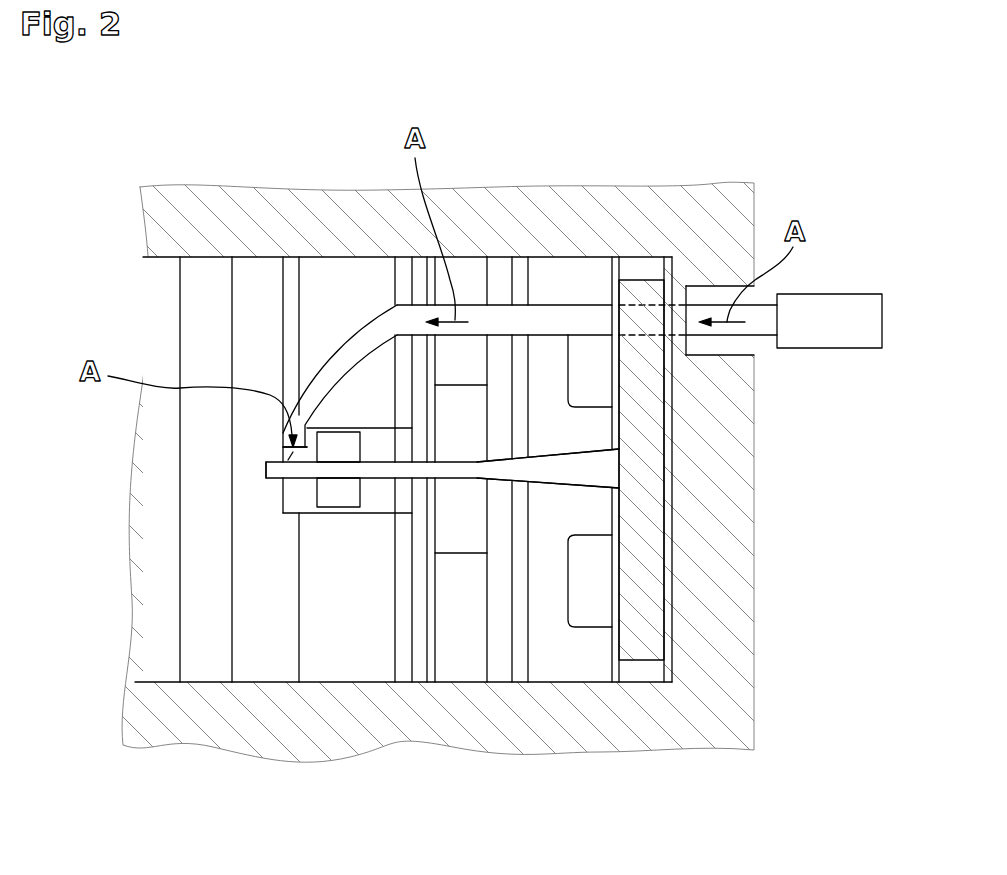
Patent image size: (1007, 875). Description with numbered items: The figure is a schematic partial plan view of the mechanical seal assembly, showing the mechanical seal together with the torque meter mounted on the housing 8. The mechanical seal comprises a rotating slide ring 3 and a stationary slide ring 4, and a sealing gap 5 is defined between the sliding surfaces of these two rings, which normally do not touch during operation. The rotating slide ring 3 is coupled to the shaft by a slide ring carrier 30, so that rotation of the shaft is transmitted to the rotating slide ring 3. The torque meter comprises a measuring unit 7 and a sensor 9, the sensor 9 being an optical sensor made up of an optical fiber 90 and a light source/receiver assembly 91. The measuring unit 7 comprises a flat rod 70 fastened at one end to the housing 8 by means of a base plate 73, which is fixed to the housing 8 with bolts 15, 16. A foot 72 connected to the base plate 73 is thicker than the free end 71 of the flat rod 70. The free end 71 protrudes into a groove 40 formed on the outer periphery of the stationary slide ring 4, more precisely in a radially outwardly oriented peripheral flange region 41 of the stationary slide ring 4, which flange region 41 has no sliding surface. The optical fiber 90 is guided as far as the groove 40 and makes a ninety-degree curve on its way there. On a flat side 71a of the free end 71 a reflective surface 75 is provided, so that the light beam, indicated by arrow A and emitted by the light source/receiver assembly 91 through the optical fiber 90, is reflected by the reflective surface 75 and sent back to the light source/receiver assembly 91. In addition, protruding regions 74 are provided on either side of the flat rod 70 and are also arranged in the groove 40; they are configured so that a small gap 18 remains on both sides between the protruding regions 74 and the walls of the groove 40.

The rotating slide ring 3 is at (206, 575).
The stationary slide ring 4 is at (248, 612).
The sealing gap 5 is at (230, 613).
The measuring unit 7 is at (470, 256).
The housing 8 is at (700, 222).
The sensor 9 is at (379, 290).
The bolt 15 is at (592, 603).
The bolt 16 is at (598, 388).
The gap 18 is at (335, 443).
The slide ring carrier 30 is at (153, 527).
The groove 40 is at (388, 493).
The flange region 41 is at (368, 637).
The flat rod 70 is at (473, 488).
The free end 71 is at (272, 467).
The flat side 71a is at (267, 444).
The foot 72 is at (597, 470).
The base plate 73 is at (637, 462).
The protruding regions 74 is at (292, 423).
The reflective surface 75 is at (288, 438).
The optical fiber 90 is at (542, 320).
The light source/receiver assembly 91 is at (830, 294).